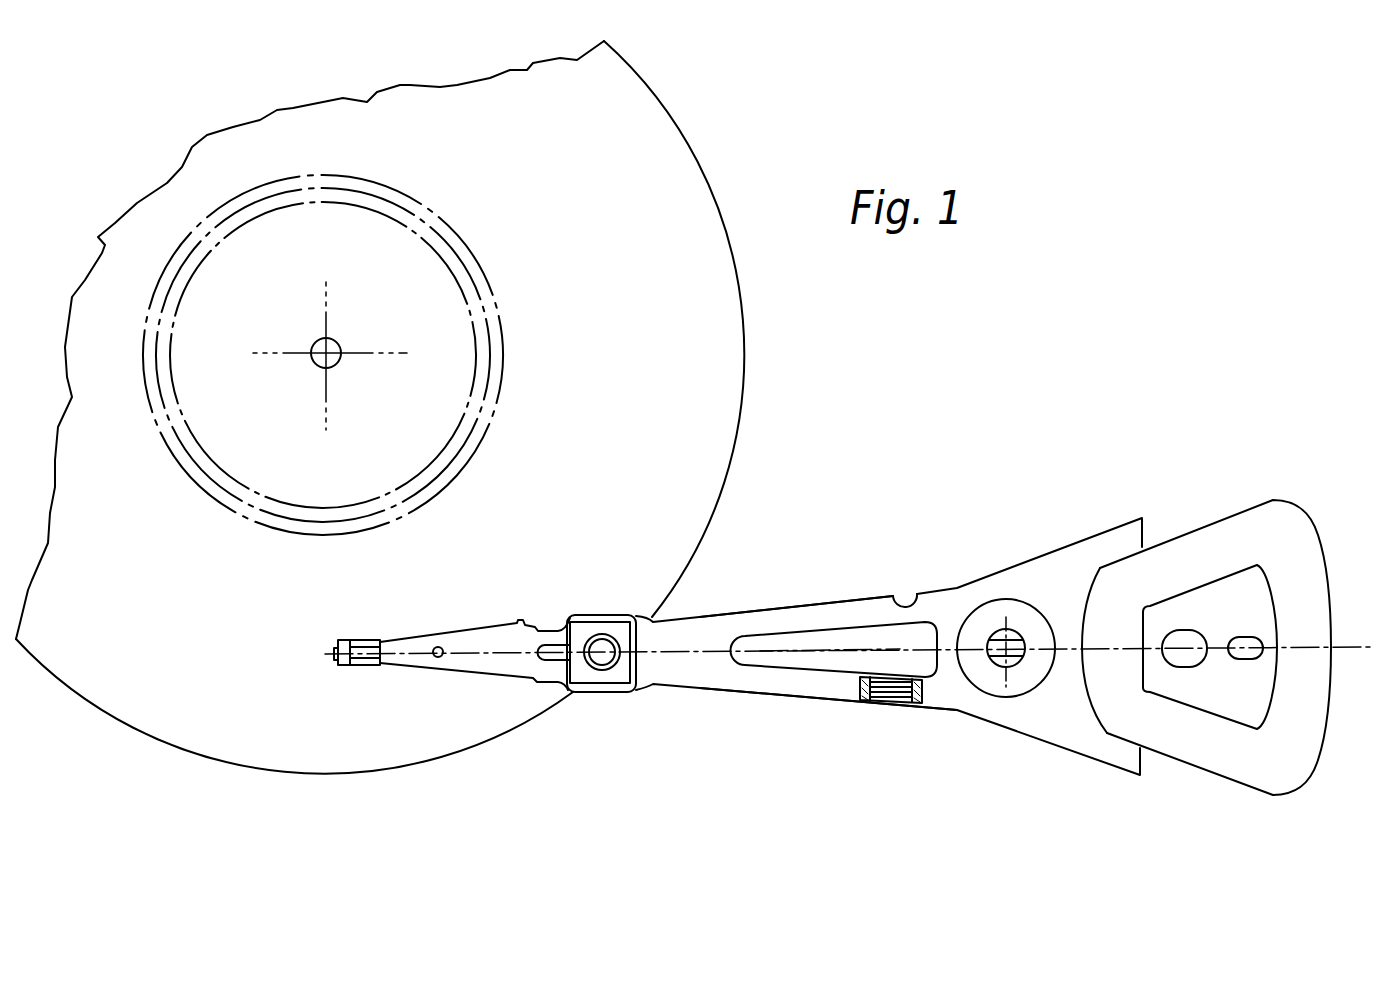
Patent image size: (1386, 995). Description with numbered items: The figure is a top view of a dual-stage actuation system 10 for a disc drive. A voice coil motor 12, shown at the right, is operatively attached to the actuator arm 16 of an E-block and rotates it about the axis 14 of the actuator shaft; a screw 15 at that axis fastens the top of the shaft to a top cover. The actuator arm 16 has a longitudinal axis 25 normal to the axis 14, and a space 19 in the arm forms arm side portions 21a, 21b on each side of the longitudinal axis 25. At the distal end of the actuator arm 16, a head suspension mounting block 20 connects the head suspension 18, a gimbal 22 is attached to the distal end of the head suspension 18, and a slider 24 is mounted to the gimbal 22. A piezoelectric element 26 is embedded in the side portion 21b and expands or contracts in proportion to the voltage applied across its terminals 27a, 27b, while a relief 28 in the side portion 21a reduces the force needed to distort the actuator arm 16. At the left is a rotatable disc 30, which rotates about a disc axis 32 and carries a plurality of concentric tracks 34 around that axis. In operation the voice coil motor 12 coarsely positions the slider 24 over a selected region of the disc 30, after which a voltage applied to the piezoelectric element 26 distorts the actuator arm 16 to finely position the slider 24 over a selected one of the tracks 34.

The dual-stage actuation system 10 is at (978, 451).
The voice coil motor 12 is at (1318, 542).
The axis 14 is at (993, 662).
The screw 15 is at (1017, 630).
The actuator arm 16 is at (845, 584).
The head suspension 18 is at (486, 619).
The space 19 is at (797, 660).
The head suspension mounting block 20 is at (605, 614).
The arm side portion 21a is at (785, 605).
The arm side portion 21b is at (817, 700).
The gimbal 22 is at (360, 638).
The slider 24 is at (343, 670).
The longitudinal axis 25 is at (695, 648).
The piezoelectric element 26 is at (887, 703).
The terminal 27a is at (866, 700).
The terminal 27b is at (917, 704).
The relief 28 is at (905, 598).
The rotatable disc 30 is at (738, 433).
The disc axis 32 is at (338, 363).
The concentric tracks 34 is at (475, 452).